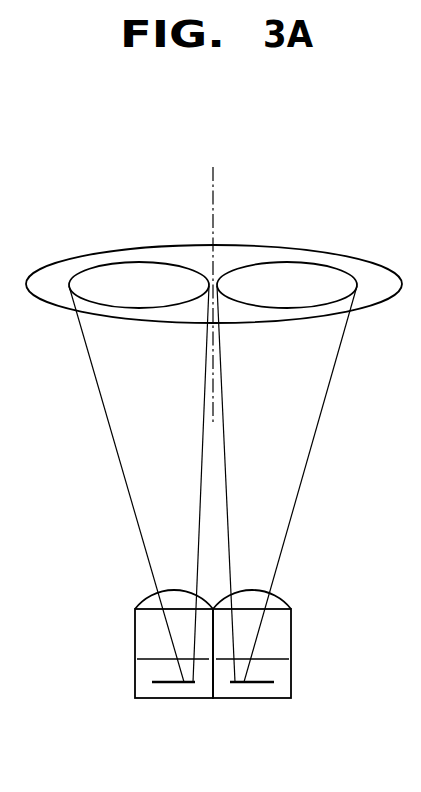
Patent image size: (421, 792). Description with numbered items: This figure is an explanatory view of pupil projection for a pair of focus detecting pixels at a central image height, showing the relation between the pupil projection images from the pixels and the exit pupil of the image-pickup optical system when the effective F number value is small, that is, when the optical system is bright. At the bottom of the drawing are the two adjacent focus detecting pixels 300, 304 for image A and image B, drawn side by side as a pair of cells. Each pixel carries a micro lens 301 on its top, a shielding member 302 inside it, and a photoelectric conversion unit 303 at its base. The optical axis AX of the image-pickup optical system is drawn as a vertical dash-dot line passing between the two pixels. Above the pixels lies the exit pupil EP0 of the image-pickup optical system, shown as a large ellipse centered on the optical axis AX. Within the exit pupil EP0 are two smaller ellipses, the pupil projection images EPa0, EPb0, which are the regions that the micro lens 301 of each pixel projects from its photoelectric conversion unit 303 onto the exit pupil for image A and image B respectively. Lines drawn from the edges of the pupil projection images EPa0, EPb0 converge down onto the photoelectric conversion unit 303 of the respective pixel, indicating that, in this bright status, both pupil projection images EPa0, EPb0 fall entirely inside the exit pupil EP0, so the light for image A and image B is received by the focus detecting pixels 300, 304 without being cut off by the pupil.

The optical axis AX is at (215, 197).
The exit pupil EP0 is at (53, 270).
The pupil projection image for image A EPa0 is at (135, 267).
The pupil projection image for image B EPb0 is at (297, 267).
The focus detecting pixel for image A 300 is at (195, 698).
The micro lens 301 is at (147, 600).
The shielding member 302 is at (148, 659).
The photoelectric conversion unit 303 is at (157, 683).
The focus detecting pixel for image B 304 is at (278, 698).